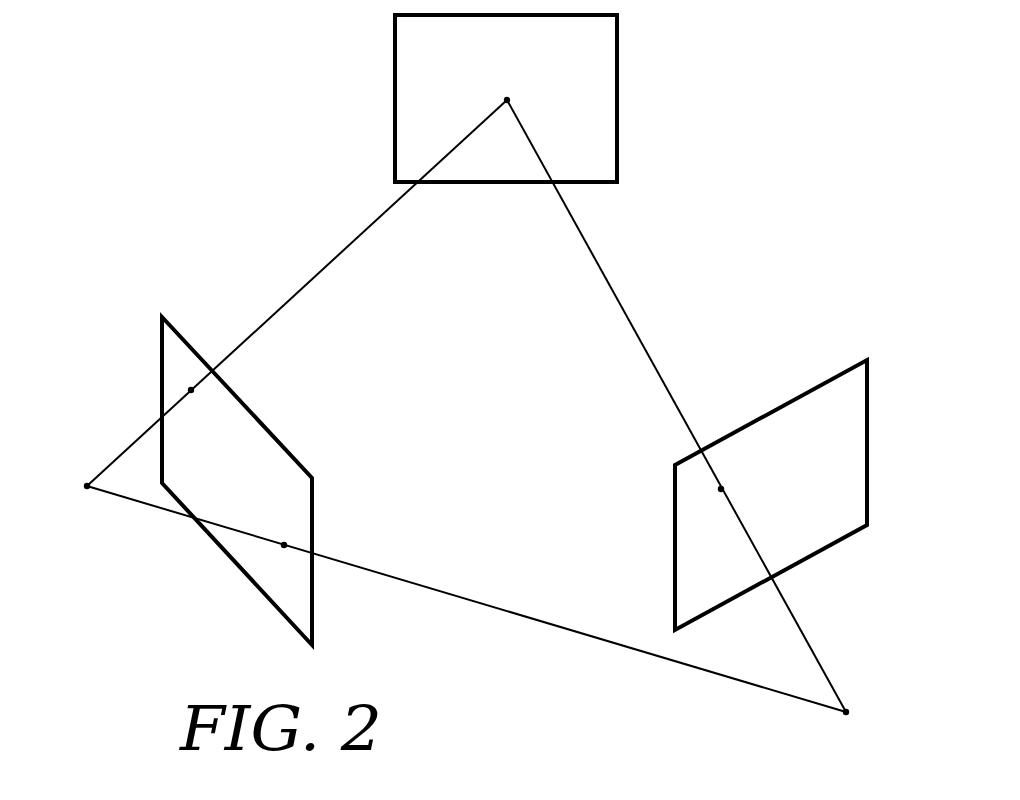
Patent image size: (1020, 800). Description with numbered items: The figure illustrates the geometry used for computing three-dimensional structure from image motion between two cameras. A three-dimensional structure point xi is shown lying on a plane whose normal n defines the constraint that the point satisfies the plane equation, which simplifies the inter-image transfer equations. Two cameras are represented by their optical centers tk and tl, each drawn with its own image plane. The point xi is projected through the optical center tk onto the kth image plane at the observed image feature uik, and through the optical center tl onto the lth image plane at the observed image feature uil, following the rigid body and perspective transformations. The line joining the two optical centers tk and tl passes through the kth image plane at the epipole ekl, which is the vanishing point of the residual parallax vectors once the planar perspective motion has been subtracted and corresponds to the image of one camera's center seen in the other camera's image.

The plane normal vector n is at (590, 78).
The 3-D structure point xi is at (504, 82).
The optical center of camera k tk is at (74, 465).
The optical center of camera l tl is at (862, 711).
The image feature in frame k uik is at (205, 407).
The image feature in frame l uil is at (740, 478).
The epipole ekl is at (280, 560).